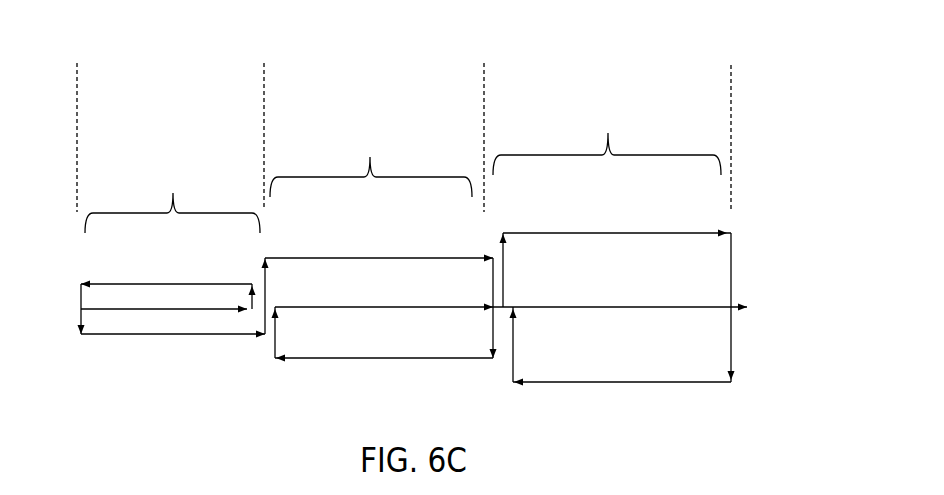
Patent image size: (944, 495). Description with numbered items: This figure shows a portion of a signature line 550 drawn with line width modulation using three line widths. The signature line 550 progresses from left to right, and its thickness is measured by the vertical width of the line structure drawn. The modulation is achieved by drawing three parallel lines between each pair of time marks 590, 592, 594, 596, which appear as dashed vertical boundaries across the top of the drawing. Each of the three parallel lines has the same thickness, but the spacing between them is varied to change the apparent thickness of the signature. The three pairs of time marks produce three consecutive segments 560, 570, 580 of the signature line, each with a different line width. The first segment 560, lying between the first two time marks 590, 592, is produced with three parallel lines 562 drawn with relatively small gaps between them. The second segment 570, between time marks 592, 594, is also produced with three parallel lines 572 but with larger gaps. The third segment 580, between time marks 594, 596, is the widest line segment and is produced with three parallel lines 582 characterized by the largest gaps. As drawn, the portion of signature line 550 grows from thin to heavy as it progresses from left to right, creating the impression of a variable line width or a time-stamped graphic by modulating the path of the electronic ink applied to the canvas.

The signature line 550 is at (81, 309).
The first segment 560 is at (172, 246).
The three parallel lines 562 is at (172, 284).
The second segment 570 is at (383, 244).
The three parallel lines 572 is at (372, 258).
The third segment 580 is at (620, 245).
The three parallel lines 582 is at (684, 233).
The time mark 590 is at (76, 122).
The time mark 592 is at (265, 122).
The time mark 594 is at (483, 123).
The time mark 596 is at (733, 123).